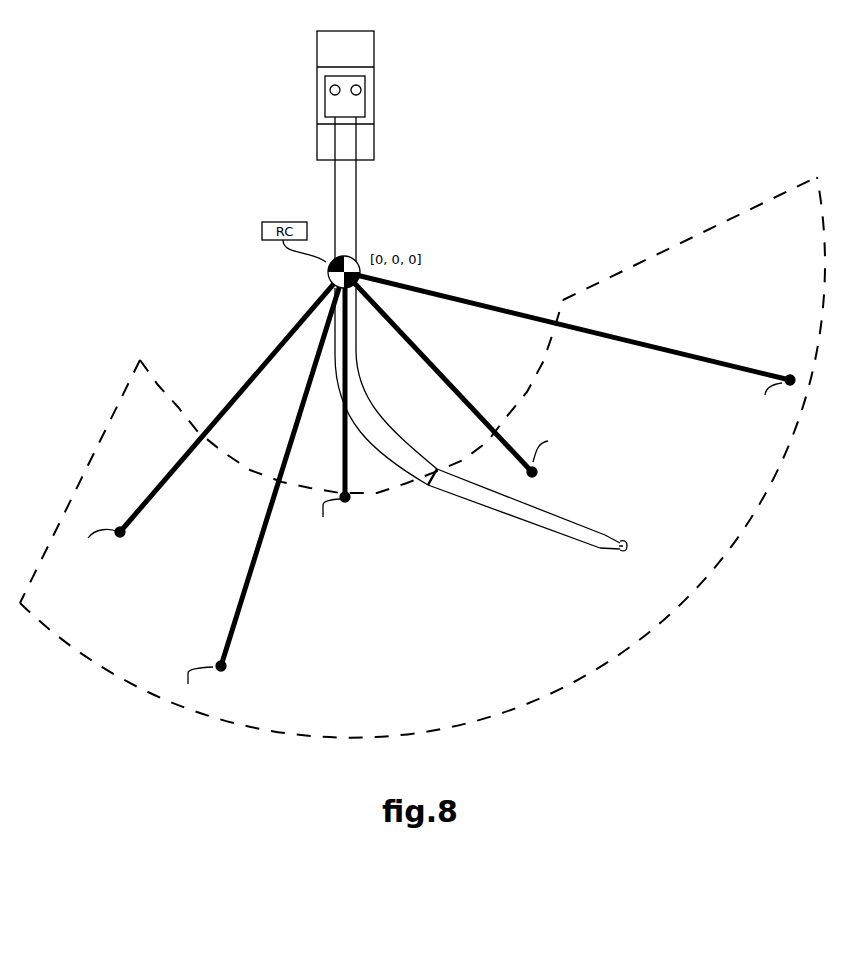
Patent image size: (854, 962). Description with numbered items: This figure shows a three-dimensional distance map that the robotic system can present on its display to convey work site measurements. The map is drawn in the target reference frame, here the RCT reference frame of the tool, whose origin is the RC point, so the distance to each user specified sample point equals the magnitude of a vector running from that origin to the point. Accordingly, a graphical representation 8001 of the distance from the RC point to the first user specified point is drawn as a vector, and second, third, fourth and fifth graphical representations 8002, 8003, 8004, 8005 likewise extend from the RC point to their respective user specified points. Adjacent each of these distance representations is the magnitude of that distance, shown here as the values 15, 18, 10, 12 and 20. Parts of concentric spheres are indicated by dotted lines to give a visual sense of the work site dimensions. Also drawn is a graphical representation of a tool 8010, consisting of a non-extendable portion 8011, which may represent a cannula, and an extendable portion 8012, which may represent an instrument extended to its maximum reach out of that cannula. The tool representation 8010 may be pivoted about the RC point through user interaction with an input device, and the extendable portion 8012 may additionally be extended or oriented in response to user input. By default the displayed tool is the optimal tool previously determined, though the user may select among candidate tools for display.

The graphical representation of a tool 8010 is at (316, 92).
The graphical representation of a distance 8001 is at (171, 472).
The second graphical representation of a distance 8002 is at (247, 583).
The third graphical representation of a distance 8003 is at (346, 447).
The fourth graphical representation of a distance 8004 is at (461, 395).
The fifth graphical representation of a distance 8005 is at (599, 333).
The non-extendable portion 8011 is at (387, 415).
The extendable portion 8012 is at (573, 545).
The distance to first position 15 is at (229, 404).
The distance to second position 18 is at (280, 471).
The distance to third position 10 is at (333, 387).
The distance to fourth position 12 is at (440, 374).
The distance to fifth position 20 is at (569, 328).